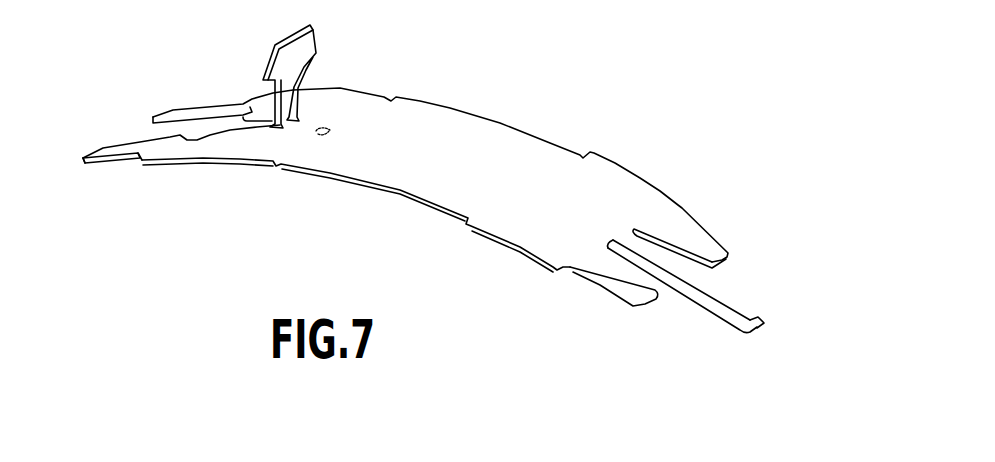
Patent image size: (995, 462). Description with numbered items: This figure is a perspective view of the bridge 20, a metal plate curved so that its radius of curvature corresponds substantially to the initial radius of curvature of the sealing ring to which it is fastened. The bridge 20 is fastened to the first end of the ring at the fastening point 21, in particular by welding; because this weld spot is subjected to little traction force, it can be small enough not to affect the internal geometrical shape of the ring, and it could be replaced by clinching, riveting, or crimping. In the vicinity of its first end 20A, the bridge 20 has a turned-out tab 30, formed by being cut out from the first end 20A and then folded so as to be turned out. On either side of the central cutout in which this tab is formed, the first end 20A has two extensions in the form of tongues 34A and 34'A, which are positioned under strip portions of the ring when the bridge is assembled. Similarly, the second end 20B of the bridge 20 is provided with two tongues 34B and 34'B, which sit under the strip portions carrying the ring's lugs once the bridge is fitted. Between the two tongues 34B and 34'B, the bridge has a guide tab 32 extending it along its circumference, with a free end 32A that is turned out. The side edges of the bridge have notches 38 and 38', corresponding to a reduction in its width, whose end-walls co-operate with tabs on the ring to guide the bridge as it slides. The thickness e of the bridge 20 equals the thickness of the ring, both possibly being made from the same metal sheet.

The bridge 20 is at (443, 179).
The first end of the bridge 20A is at (116, 180).
The second end of the bridge 20B is at (598, 295).
The fastening point 21 is at (330, 129).
The turned-out tab 30 is at (311, 55).
The guide tab 32 is at (730, 295).
The free end of the guide tab 32A is at (763, 328).
The tongue 34A is at (120, 152).
The tongue 34'A is at (202, 82).
The tongue 34B is at (644, 296).
The tongue 34'B is at (691, 222).
The notch 38 is at (356, 215).
The notch 38' is at (440, 159).
The thickness e is at (230, 132).